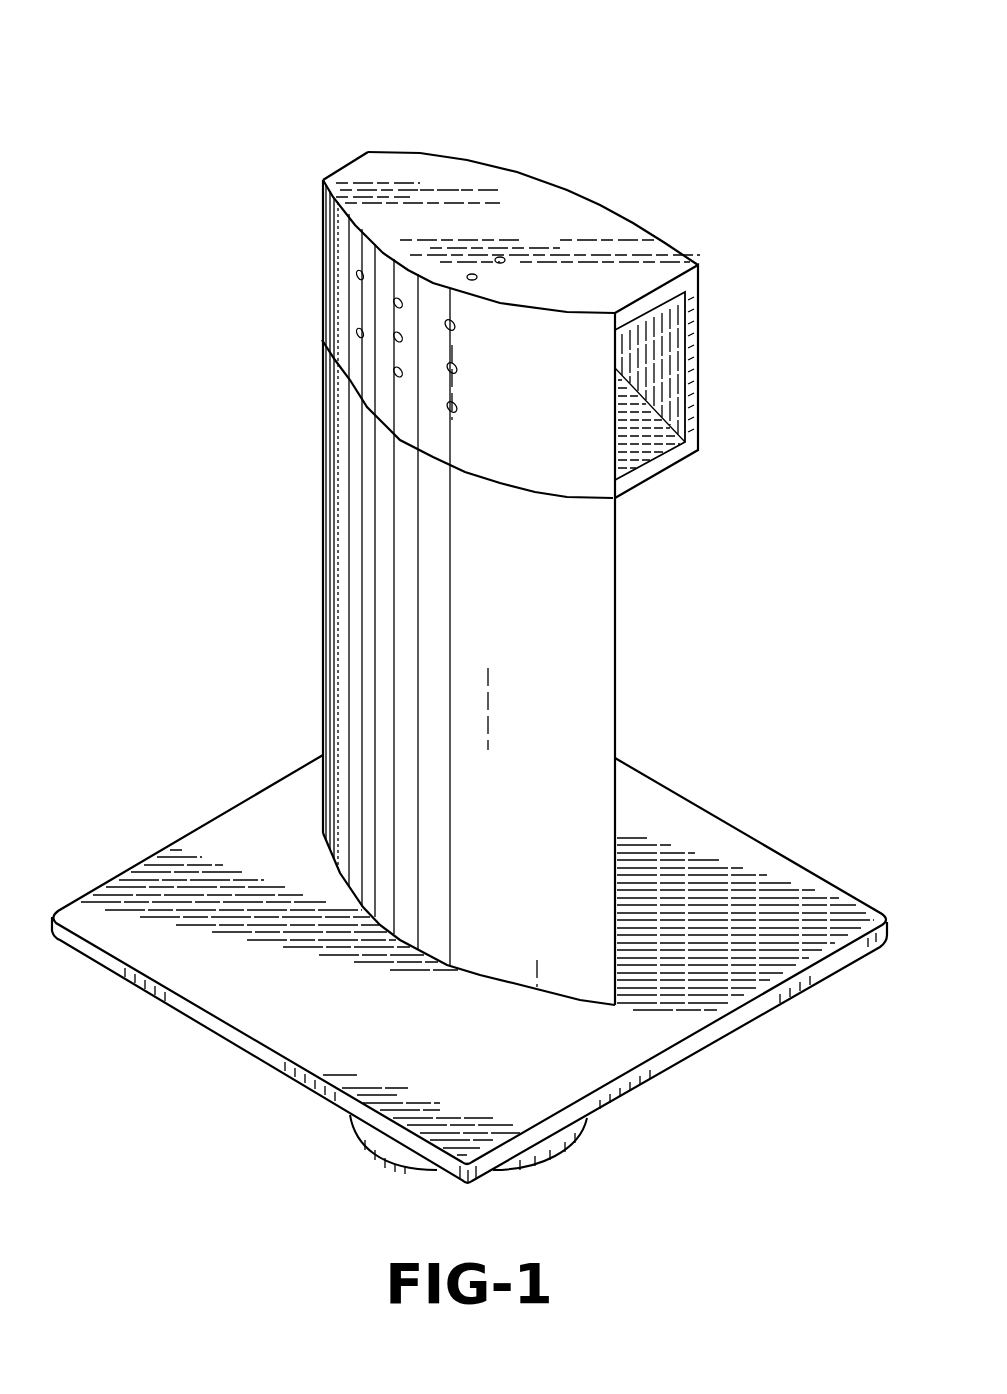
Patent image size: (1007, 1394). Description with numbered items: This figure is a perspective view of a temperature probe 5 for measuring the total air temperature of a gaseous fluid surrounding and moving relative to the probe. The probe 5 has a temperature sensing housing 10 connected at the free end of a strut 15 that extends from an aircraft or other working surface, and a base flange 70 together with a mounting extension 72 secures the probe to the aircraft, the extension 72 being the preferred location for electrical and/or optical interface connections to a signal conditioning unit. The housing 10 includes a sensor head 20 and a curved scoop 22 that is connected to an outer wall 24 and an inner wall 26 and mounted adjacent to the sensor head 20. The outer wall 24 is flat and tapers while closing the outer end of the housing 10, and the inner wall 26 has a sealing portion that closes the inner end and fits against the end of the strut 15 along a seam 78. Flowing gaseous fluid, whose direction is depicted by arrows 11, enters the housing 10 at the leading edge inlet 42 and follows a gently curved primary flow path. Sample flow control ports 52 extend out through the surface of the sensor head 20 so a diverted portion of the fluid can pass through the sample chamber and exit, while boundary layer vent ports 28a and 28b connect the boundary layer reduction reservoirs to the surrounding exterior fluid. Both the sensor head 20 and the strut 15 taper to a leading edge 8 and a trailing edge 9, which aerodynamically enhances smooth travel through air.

The temperature probe 5 is at (343, 68).
The temperature sensing housing 10 is at (336, 154).
The leading edge 8 is at (615, 673).
The trailing edge 9 is at (323, 603).
The strut 15 is at (333, 654).
The sensor head 20 is at (472, 439).
The curved scoop 22 is at (698, 297).
The outer wall 24 is at (612, 222).
The inner wall 26 is at (686, 473).
The boundary layer vent ports 28a is at (360, 275).
The boundary layer vent ports 28b is at (500, 258).
The sample flow control ports 52 is at (398, 303).
The leading edge inlet 42 is at (635, 450).
The seam 78 is at (577, 500).
The arrows 11 is at (742, 384).
The base flange 70 is at (267, 818).
The mounting extension 72 is at (390, 1150).